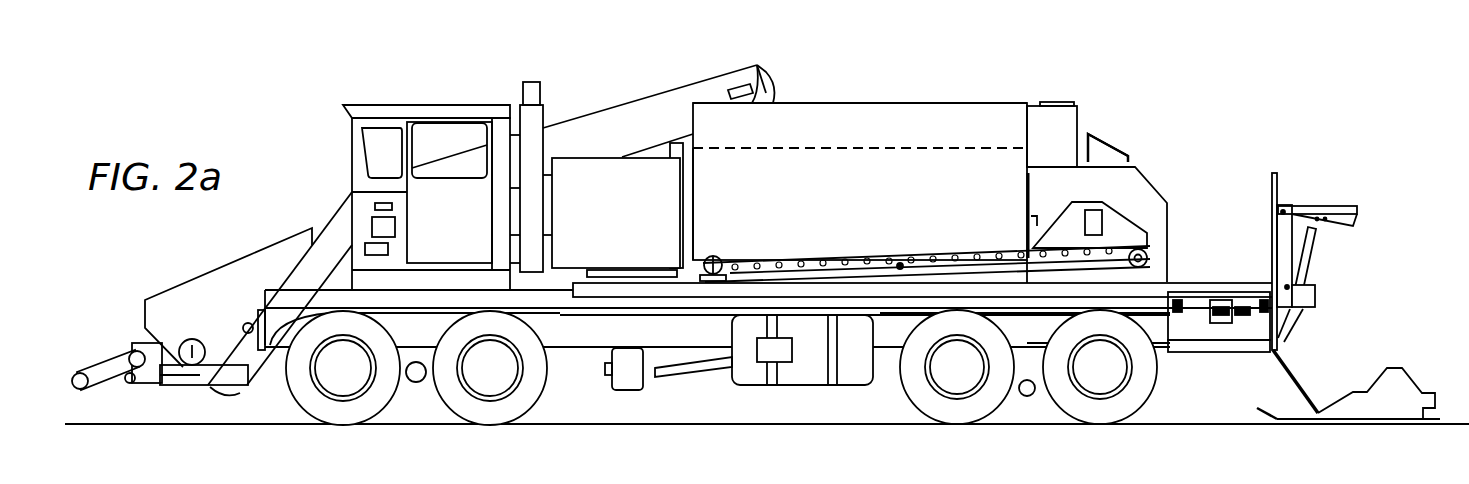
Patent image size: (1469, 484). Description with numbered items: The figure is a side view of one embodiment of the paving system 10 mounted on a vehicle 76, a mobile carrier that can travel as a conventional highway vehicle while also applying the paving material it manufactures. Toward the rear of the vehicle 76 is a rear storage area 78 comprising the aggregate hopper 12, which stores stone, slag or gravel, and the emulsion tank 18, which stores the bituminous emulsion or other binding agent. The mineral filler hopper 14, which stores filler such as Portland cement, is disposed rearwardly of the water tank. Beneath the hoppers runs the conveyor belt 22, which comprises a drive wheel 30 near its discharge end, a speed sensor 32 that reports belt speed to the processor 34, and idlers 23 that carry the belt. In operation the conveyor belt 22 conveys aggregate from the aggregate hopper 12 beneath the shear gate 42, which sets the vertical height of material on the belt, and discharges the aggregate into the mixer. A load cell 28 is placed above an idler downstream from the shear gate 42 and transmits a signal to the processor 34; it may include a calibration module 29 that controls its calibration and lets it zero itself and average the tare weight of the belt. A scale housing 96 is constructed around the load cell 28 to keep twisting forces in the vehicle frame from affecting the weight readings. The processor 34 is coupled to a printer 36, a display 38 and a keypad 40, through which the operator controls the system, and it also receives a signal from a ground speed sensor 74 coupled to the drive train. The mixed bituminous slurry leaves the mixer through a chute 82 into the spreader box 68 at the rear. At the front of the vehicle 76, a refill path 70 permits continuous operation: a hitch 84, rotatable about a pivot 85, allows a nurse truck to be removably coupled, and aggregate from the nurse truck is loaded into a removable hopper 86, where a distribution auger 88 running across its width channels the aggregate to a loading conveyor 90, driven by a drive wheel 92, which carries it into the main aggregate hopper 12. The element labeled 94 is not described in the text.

The paving system 10 is at (1325, 60).
The aggregate hopper 12 is at (860, 181).
The mineral filler hopper 14 is at (1050, 110).
The emulsion tank 18 is at (792, 204).
The conveyor belt 22 is at (826, 247).
The idlers 23 is at (900, 263).
The load cell 28 is at (1103, 220).
The calibration module 29 is at (1112, 140).
The drive wheel 30 is at (1150, 258).
The speed sensor 32 is at (712, 258).
The processor 34 is at (395, 224).
The printer 36 is at (388, 251).
The display 38 is at (1108, 148).
The keypad 40 is at (1108, 148).
The shear gate 42 is at (1033, 200).
The spreader box 68 is at (1376, 393).
The refill path 70 is at (509, 207).
The ground speed sensor 74 is at (604, 370).
The vehicle 76 is at (393, 92).
The rear storage area 78 is at (905, 62).
The chute 82 is at (1290, 323).
The hitch 84 is at (100, 367).
The pivot 85 is at (248, 322).
The hopper 86 is at (203, 282).
The distribution auger 88 is at (190, 348).
The loading conveyor 90 is at (643, 108).
The drive wheel 92 is at (768, 101).
The engine housing 94 is at (617, 210).
The scale housing 96 is at (1103, 208).